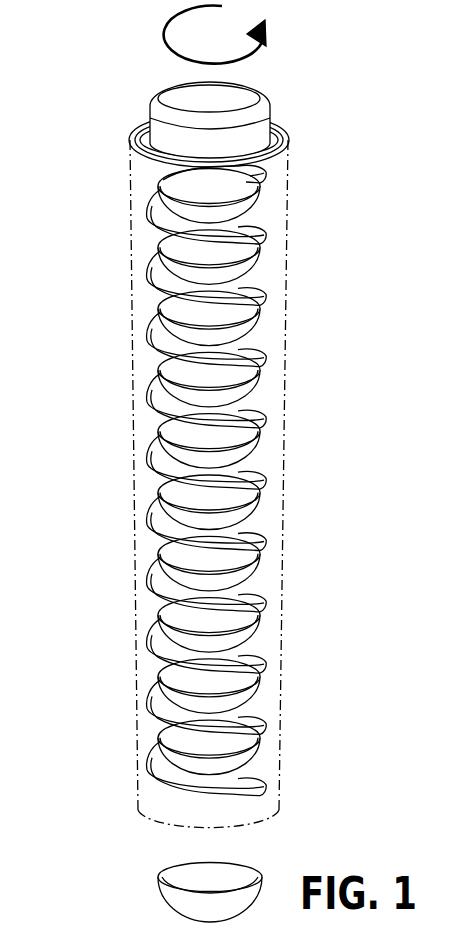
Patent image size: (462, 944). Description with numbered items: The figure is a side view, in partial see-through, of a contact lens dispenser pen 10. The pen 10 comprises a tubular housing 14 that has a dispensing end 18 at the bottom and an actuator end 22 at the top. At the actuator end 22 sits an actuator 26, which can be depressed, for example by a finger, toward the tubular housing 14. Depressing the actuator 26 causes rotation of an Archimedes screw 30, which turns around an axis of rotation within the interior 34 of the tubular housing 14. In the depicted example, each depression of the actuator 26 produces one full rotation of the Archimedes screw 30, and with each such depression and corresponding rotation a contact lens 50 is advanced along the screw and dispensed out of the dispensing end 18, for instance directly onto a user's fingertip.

The contact lens dispenser pen 10 is at (106, 181).
The tubular housing 14 is at (260, 499).
The dispensing end 18 is at (254, 824).
The actuator end 22 is at (289, 137).
The actuator 26 is at (262, 93).
The Archimedes screw 30 is at (211, 480).
The interior 34 is at (158, 345).
The contact lens 50 is at (176, 306).